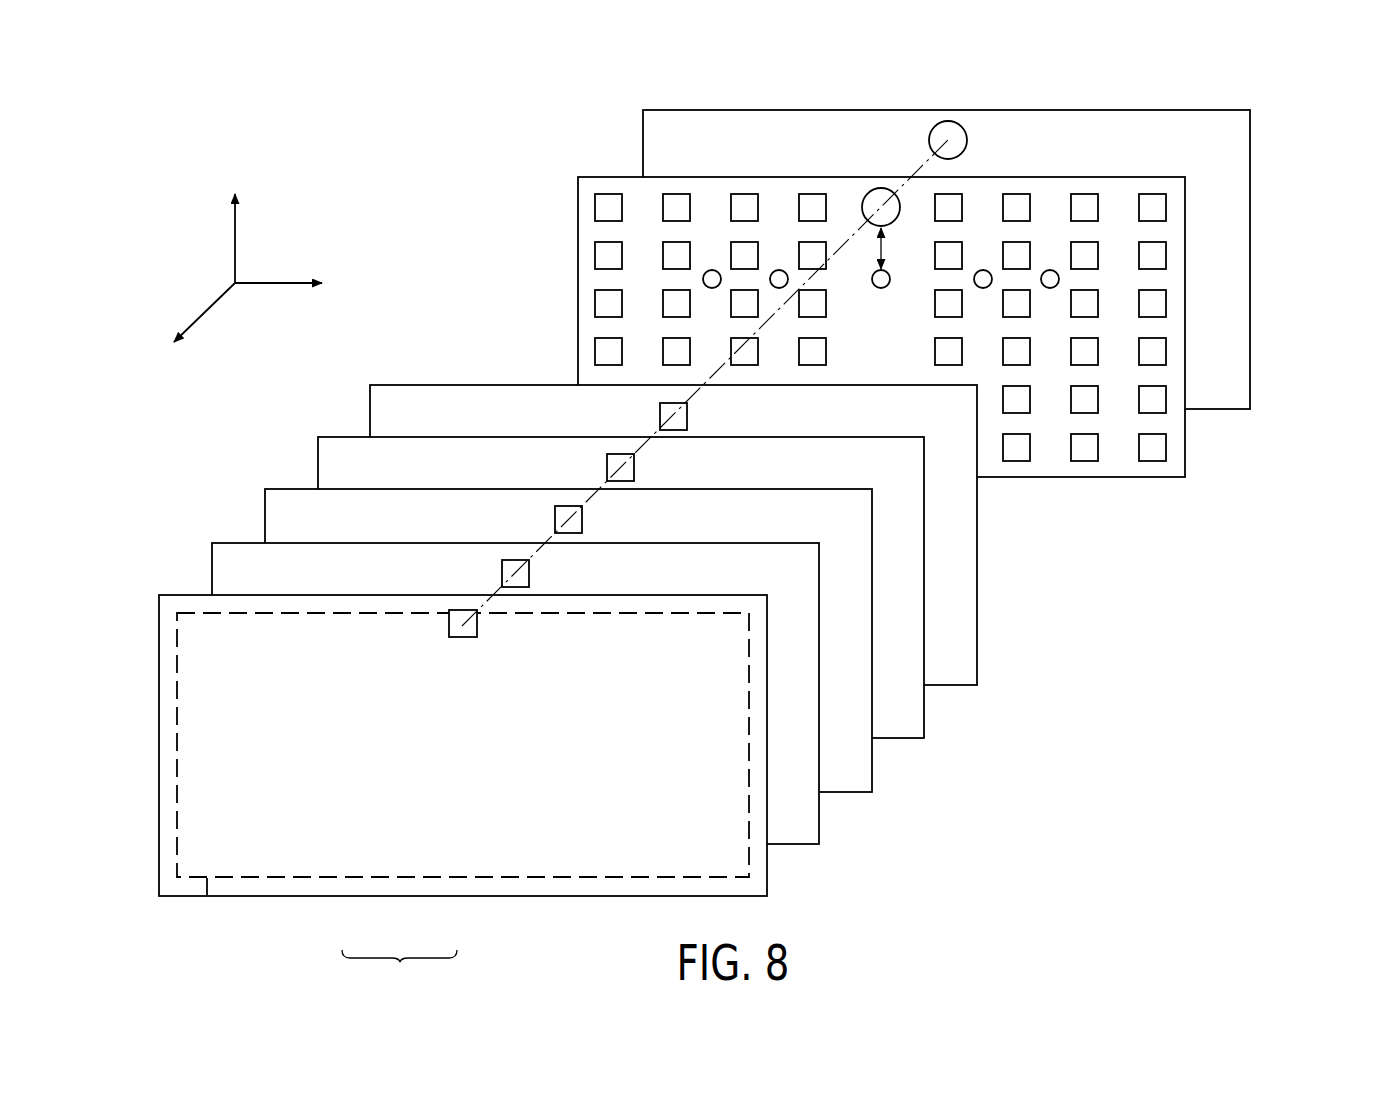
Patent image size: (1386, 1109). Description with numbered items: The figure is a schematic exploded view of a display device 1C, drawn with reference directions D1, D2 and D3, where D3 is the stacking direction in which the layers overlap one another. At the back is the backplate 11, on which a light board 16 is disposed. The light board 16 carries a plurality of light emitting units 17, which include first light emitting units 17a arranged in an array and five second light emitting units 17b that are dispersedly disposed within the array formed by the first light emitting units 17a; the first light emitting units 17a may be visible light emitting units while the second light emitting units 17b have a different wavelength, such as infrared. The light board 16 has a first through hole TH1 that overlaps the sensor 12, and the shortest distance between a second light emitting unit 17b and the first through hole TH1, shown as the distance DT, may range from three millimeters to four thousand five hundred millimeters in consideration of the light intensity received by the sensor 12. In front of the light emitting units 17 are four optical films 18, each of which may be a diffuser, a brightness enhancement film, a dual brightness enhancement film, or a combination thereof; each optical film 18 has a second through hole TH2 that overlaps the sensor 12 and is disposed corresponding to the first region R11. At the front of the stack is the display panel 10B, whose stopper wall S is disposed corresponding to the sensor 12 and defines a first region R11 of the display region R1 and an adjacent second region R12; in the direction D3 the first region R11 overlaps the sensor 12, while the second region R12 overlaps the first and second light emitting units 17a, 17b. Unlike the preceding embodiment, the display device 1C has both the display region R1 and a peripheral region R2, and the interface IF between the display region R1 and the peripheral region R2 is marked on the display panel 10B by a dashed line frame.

The display device 1C is at (1304, 104).
The backplate 11 is at (662, 140).
The sensor 12 is at (948, 128).
The light board 16 is at (602, 233).
The light emitting units 17 is at (1045, 416).
The first light emitting units 17a is at (1090, 448).
The second light emitting units 17b is at (1050, 288).
The optical film 18 is at (388, 416).
The first through hole TH1 is at (880, 186).
The second through hole TH2 is at (690, 420).
The distance DT is at (899, 248).
The display panel 10B is at (170, 683).
The stopper wall S is at (477, 627).
The interface IF is at (207, 900).
The display region R1 is at (399, 971).
The first region R11 is at (470, 634).
The second region R12 is at (372, 841).
The peripheral region R2 is at (285, 883).
The direction D1 is at (297, 285).
The direction D2 is at (234, 223).
The direction D3 is at (192, 331).